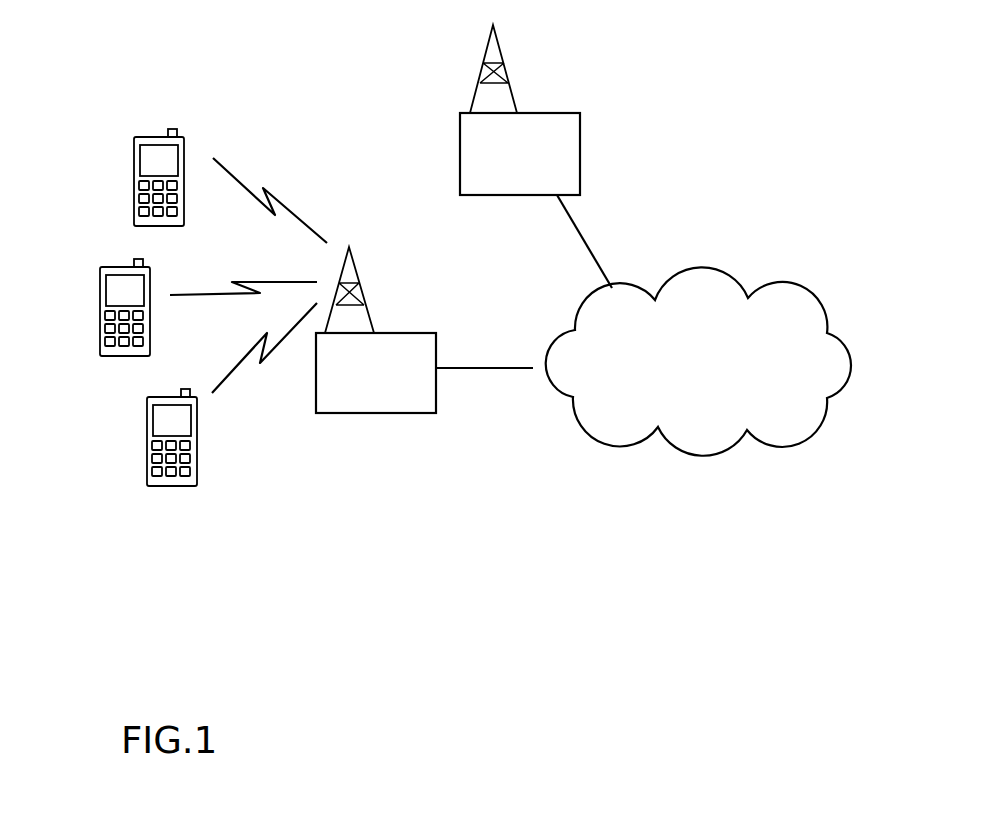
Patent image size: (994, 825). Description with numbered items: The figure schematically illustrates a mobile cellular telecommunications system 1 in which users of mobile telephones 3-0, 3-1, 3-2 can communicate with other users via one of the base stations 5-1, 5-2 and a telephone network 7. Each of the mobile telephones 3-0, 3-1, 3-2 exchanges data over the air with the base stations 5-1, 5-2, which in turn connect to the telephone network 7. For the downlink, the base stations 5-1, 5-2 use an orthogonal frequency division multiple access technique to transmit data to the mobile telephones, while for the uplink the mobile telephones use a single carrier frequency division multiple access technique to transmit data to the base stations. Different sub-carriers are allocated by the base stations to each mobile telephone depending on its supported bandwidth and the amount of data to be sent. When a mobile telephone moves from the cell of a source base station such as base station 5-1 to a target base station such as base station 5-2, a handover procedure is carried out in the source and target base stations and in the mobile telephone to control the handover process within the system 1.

The mobile telecommunications system 1 is at (603, 570).
The mobile telephone 3-0 is at (134, 220).
The mobile telephone 3-1 is at (100, 348).
The mobile telephone 3-2 is at (152, 478).
The base station 5-1 is at (388, 347).
The base station 5-2 is at (567, 130).
The telephone network 7 is at (708, 283).